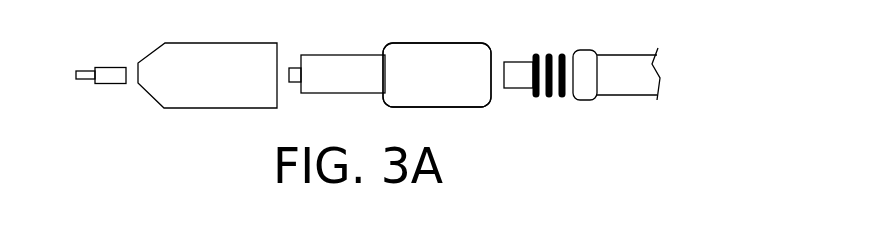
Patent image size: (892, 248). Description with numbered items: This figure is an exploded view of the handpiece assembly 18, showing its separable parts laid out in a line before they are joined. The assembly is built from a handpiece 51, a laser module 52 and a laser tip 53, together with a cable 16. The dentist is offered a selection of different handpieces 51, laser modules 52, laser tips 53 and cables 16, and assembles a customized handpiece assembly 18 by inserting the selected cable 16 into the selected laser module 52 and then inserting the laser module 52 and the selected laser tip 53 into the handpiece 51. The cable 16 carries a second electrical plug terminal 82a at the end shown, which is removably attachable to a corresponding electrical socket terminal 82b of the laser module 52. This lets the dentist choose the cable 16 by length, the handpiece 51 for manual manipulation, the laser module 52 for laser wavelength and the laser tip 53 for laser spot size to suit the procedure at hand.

The laser tip 53 is at (113, 83).
The laser module 52 is at (234, 90).
The handpiece 51 is at (426, 88).
The electrical socket terminal 82b is at (467, 107).
The second electrical plug terminal 82a is at (518, 88).
The cable 16 is at (641, 87).
The handpiece assembly 18 is at (668, 60).